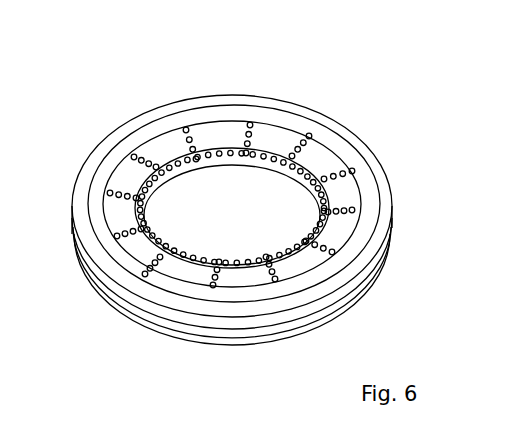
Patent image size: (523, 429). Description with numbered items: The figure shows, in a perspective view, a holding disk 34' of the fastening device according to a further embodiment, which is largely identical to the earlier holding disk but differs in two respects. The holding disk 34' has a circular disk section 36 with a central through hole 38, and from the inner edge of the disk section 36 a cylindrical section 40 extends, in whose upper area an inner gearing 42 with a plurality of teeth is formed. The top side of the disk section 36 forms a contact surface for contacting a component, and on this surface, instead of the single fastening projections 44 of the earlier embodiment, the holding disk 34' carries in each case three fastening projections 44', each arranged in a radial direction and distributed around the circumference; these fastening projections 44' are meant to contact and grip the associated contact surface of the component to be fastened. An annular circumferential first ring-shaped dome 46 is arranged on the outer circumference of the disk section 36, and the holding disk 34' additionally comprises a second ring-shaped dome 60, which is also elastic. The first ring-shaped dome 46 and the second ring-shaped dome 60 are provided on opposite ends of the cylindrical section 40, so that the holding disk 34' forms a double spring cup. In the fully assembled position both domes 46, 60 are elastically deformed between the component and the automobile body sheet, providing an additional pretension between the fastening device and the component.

The holding disk 34' is at (252, 196).
The circular disk section 36 is at (127, 181).
The central through hole 38 is at (213, 190).
The cylindrical section 40 is at (237, 138).
The inner gearing 42 is at (263, 153).
The fastening projections 44' is at (229, 161).
The first ring-shaped dome 46 is at (373, 159).
The second ring-shaped dome 60 is at (172, 333).
The fastening projections 44 is at (513, 417).